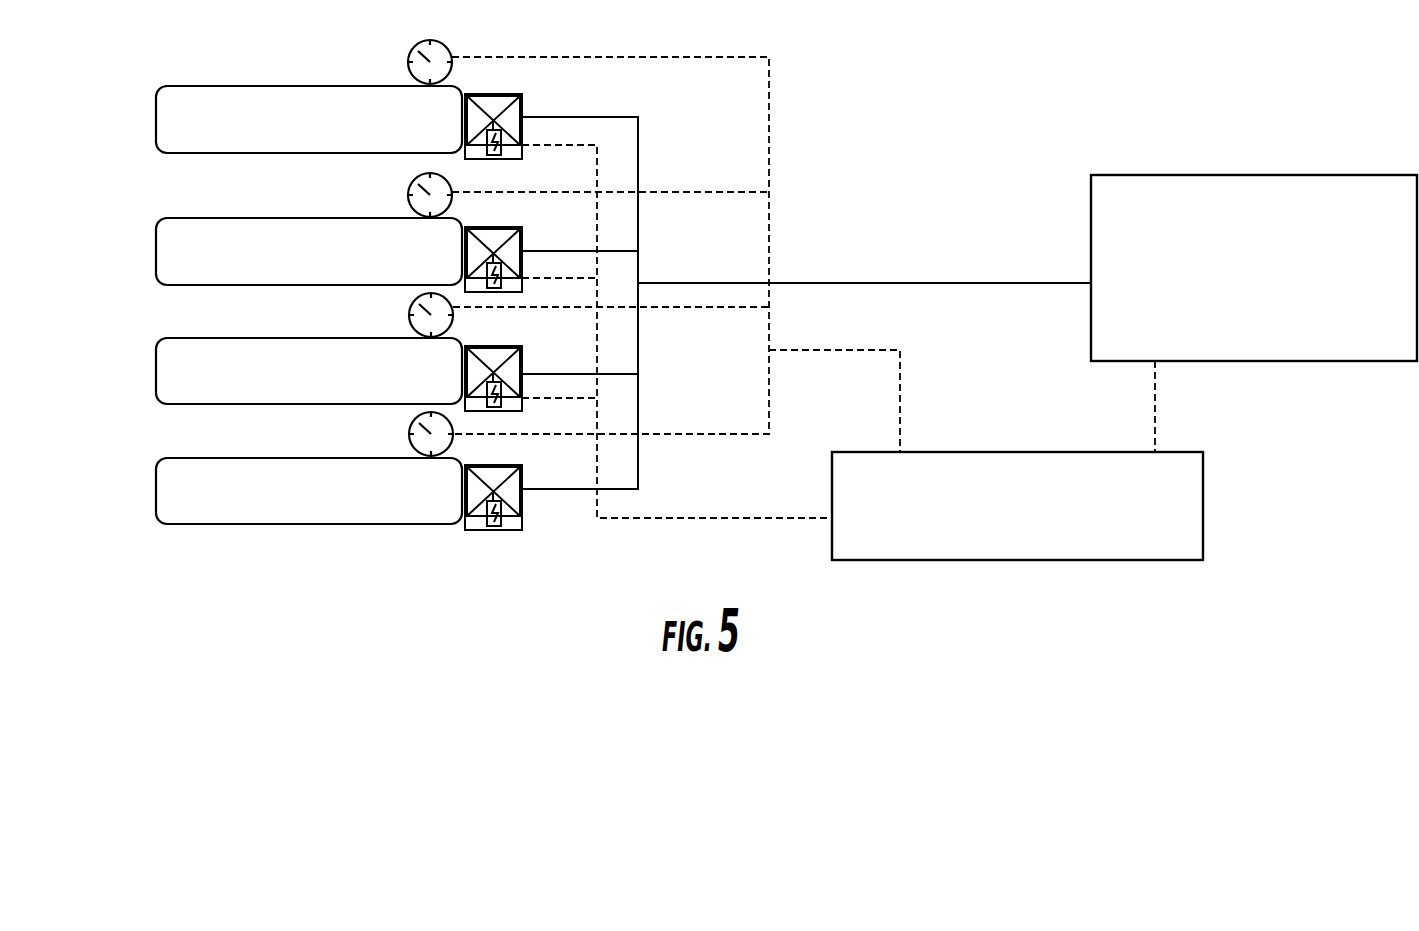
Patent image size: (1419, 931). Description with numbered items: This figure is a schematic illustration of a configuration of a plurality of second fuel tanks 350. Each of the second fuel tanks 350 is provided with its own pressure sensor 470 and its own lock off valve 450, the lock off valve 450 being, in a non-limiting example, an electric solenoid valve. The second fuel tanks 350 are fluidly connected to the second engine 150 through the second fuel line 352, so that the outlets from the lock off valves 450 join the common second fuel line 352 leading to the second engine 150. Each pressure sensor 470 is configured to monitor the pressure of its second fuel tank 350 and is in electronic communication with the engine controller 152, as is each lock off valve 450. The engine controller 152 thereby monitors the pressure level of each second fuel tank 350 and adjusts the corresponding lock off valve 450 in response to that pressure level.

The second fuel tank 350 is at (166, 87).
The pressure sensor 470 is at (408, 61).
The lock off valve 450 is at (494, 156).
The second fuel line 352 is at (958, 284).
The second engine 150 is at (1272, 352).
The engine controller 152 is at (1117, 553).